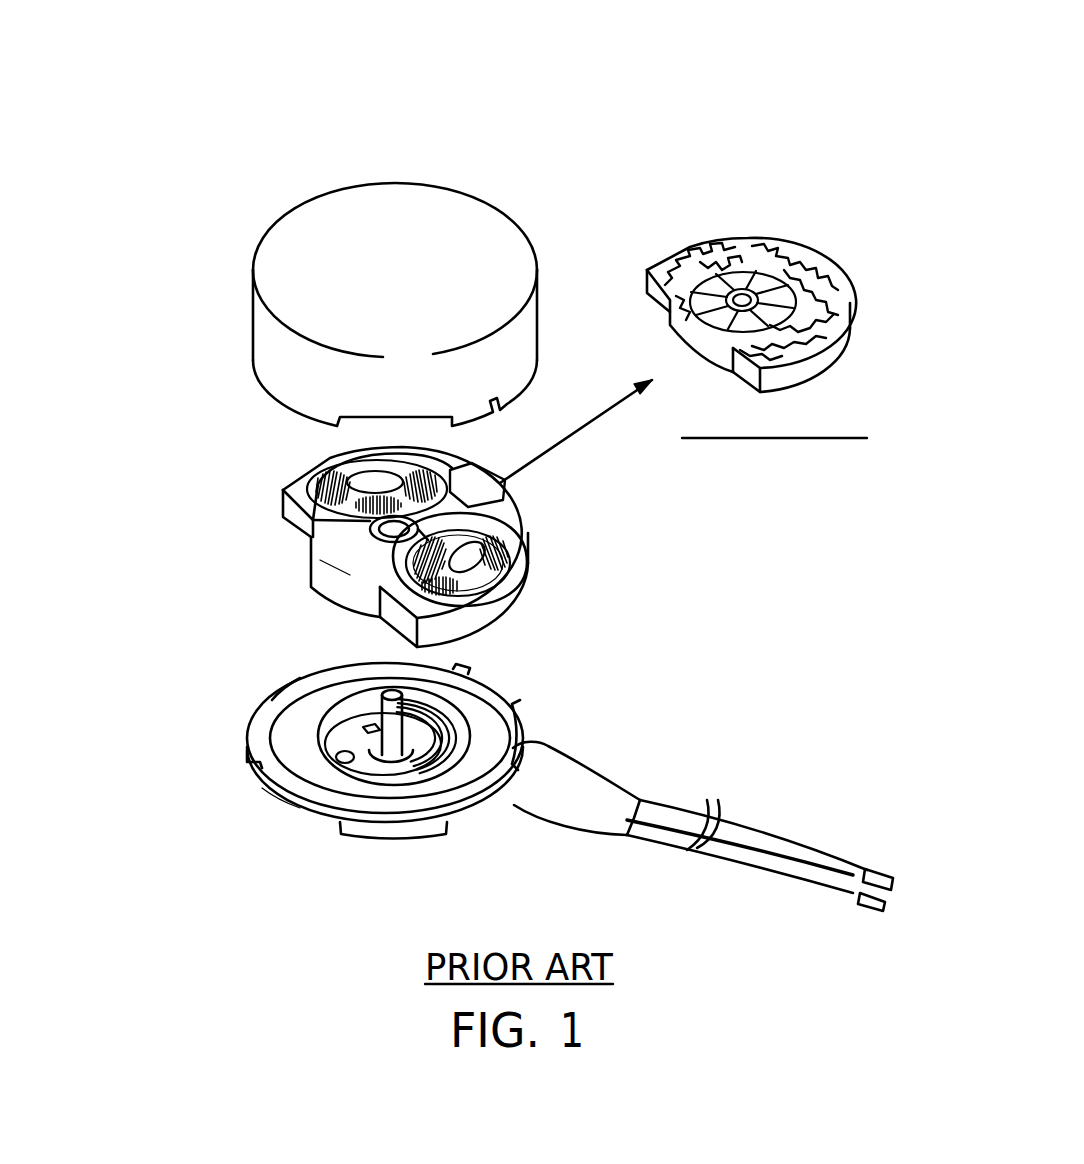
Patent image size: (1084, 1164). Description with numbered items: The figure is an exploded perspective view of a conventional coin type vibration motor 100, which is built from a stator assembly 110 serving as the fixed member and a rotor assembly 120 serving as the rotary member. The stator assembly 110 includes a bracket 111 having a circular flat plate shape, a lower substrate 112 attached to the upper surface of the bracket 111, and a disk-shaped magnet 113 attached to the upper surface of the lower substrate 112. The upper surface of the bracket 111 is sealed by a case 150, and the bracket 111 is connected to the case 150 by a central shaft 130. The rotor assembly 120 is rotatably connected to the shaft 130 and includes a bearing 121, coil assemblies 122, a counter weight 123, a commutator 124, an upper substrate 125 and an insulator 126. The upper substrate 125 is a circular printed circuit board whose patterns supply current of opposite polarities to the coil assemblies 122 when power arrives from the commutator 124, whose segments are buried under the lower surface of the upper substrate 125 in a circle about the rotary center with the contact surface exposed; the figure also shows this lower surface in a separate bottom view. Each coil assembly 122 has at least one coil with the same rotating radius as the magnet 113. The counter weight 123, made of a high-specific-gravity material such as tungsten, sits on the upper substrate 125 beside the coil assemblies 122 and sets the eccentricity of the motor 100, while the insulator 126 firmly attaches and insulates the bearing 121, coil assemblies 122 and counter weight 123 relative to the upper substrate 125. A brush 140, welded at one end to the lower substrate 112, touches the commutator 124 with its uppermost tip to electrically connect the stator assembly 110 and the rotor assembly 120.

The coin type vibration motor 100 is at (512, 80).
The stator assembly 110 is at (238, 703).
The bracket 111 is at (288, 792).
The lower substrate 112 is at (338, 752).
The magnet 113 is at (272, 742).
The rotor assembly 120 is at (272, 472).
The bearing 121 is at (370, 532).
The coil assemblies 122 is at (500, 545).
The counter weight 123 is at (508, 488).
The commutator 124 is at (776, 288).
The upper substrate 125 is at (815, 312).
The insulator 126 is at (358, 563).
The shaft 130 is at (390, 690).
The brush 140 is at (440, 705).
The case 150 is at (241, 254).